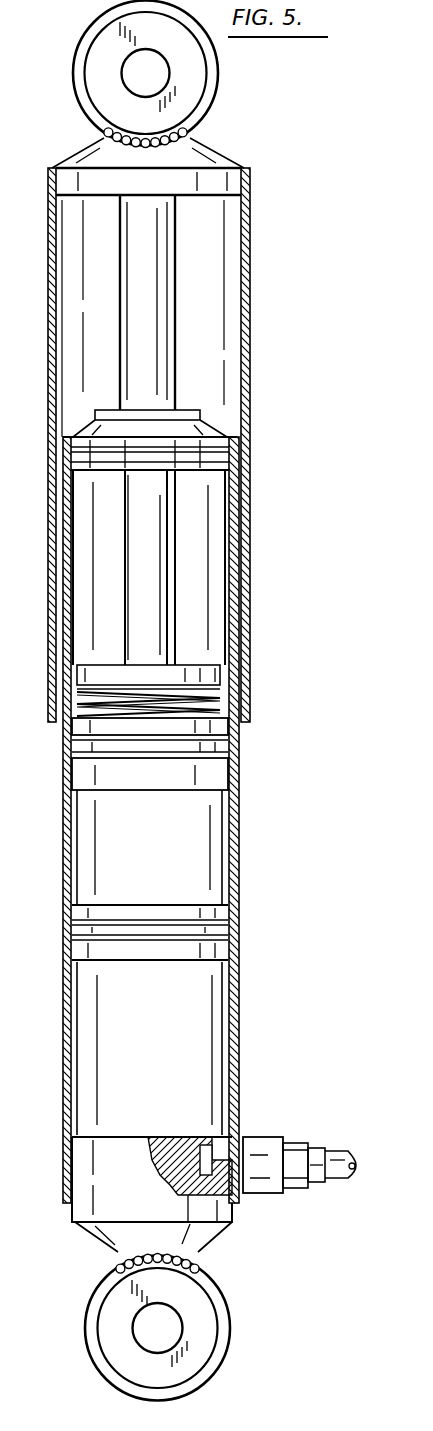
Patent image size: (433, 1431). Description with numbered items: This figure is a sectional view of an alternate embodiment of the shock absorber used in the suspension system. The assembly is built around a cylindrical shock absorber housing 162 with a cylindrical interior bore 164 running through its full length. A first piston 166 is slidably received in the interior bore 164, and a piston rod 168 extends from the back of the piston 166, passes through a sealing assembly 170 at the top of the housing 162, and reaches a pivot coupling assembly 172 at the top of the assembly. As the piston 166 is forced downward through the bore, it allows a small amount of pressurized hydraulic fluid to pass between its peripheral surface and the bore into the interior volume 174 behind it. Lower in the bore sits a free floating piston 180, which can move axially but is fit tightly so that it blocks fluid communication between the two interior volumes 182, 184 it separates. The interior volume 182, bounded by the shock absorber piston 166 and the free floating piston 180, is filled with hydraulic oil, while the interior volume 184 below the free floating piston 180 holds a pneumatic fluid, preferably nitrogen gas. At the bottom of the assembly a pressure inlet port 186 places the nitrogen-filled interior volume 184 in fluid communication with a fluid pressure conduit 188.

The shock absorber housing 162 is at (240, 816).
The interior bore 164 is at (222, 568).
The first piston 166 is at (213, 777).
The piston rod 168 is at (160, 540).
The sealing assembly 170 is at (212, 428).
The pivot coupling assembly 172 is at (80, 42).
The interior volume 174 is at (200, 630).
The free floating piston 180 is at (212, 957).
The interior volume 182 is at (195, 887).
The interior volume 184 is at (220, 1002).
The pressure inlet port 186 is at (272, 1136).
The fluid pressure conduit 188 is at (343, 1172).